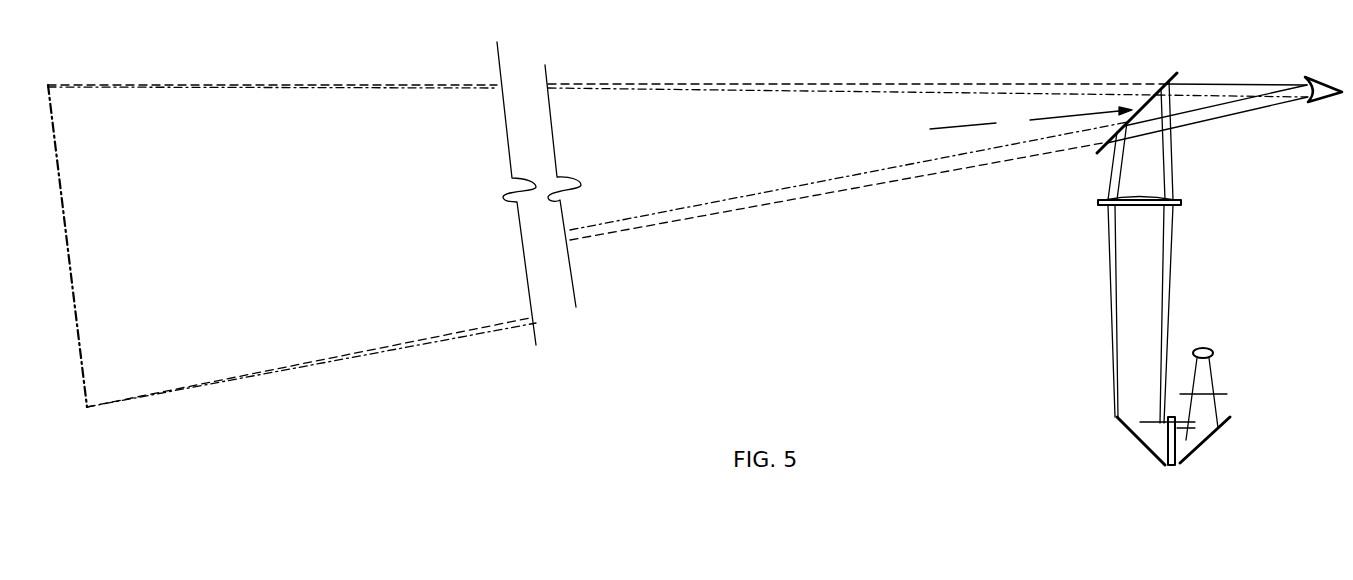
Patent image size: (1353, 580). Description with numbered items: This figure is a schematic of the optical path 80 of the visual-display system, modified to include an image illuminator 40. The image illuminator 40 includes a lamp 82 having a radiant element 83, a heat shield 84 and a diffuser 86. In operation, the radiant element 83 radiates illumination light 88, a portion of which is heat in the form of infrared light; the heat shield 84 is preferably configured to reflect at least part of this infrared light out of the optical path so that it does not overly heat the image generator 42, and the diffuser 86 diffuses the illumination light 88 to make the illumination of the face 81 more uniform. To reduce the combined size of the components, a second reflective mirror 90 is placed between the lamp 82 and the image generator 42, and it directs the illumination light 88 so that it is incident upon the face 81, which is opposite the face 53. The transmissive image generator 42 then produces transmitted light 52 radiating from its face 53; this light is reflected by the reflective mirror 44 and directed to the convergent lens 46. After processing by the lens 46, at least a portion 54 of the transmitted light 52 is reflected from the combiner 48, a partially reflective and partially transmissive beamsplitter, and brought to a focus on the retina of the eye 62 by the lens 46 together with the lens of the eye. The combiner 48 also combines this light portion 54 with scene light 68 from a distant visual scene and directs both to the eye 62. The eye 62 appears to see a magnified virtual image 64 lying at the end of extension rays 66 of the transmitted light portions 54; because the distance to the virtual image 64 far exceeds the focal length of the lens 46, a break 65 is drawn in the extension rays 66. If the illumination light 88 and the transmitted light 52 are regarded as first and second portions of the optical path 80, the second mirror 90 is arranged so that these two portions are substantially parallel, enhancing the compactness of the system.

The image illuminator 40 is at (1231, 369).
The image generator 42 is at (1168, 482).
The reflective mirror 44 is at (1118, 418).
The convergent lens 46 is at (1182, 202).
The combiner 48 is at (1172, 71).
The transmitted light 52 is at (1107, 245).
The face of the image generator 53 is at (1160, 422).
The portion of the transmitted light 54 is at (1100, 165).
The eye 62 is at (1315, 117).
The virtual image 64 is at (68, 243).
The break 65 is at (552, 112).
The extension rays 66 is at (736, 83).
The scene light 68 is at (1031, 120).
The optical path 80 is at (1067, 385).
The face of the image generator 81 is at (1183, 463).
The lamp 82 is at (1220, 338).
The radiant element 83 is at (1197, 347).
The heat shield 84 is at (1228, 394).
The diffuser 86 is at (1178, 387).
The illumination light 88 is at (1220, 386).
The second reflective mirror 90 is at (1230, 418).